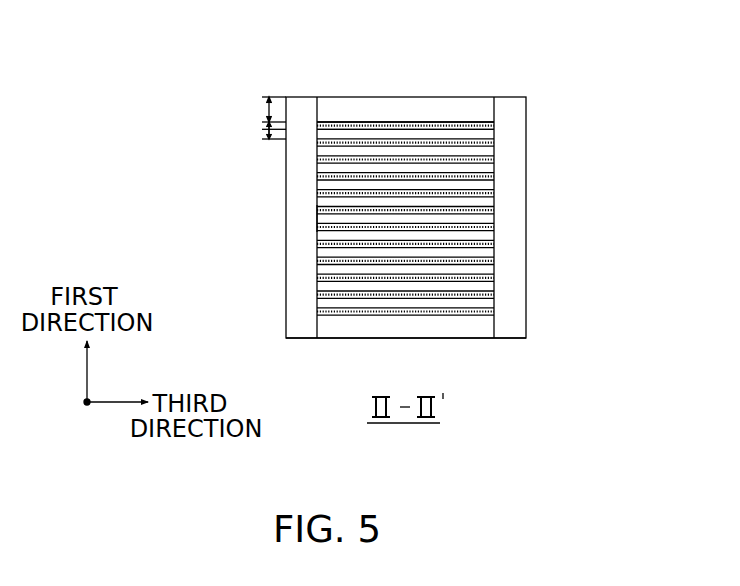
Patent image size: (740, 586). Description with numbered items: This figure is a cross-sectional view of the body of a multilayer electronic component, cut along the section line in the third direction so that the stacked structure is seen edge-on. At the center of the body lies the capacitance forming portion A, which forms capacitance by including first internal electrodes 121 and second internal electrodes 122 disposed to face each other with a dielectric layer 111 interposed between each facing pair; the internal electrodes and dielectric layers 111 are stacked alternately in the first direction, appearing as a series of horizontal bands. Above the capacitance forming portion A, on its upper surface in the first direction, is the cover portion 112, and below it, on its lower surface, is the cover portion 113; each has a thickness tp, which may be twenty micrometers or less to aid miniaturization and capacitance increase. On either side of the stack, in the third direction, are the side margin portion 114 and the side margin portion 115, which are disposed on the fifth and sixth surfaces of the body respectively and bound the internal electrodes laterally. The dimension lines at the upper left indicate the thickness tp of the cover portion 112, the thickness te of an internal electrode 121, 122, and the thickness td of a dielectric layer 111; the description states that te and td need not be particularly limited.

The cover portion 112 is at (411, 112).
The dielectric layer 111 is at (497, 130).
The first internal electrode 121 is at (494, 113).
The second internal electrode 122 is at (497, 138).
The cover portion 113 is at (520, 316).
The side margin portion 114 is at (300, 257).
The side margin portion 115 is at (520, 243).
The capacitance forming portion A is at (312, 219).
The thickness of cover portion tp is at (268, 110).
The thickness of internal electrode te is at (266, 125).
The thickness of dielectric layer td is at (266, 135).